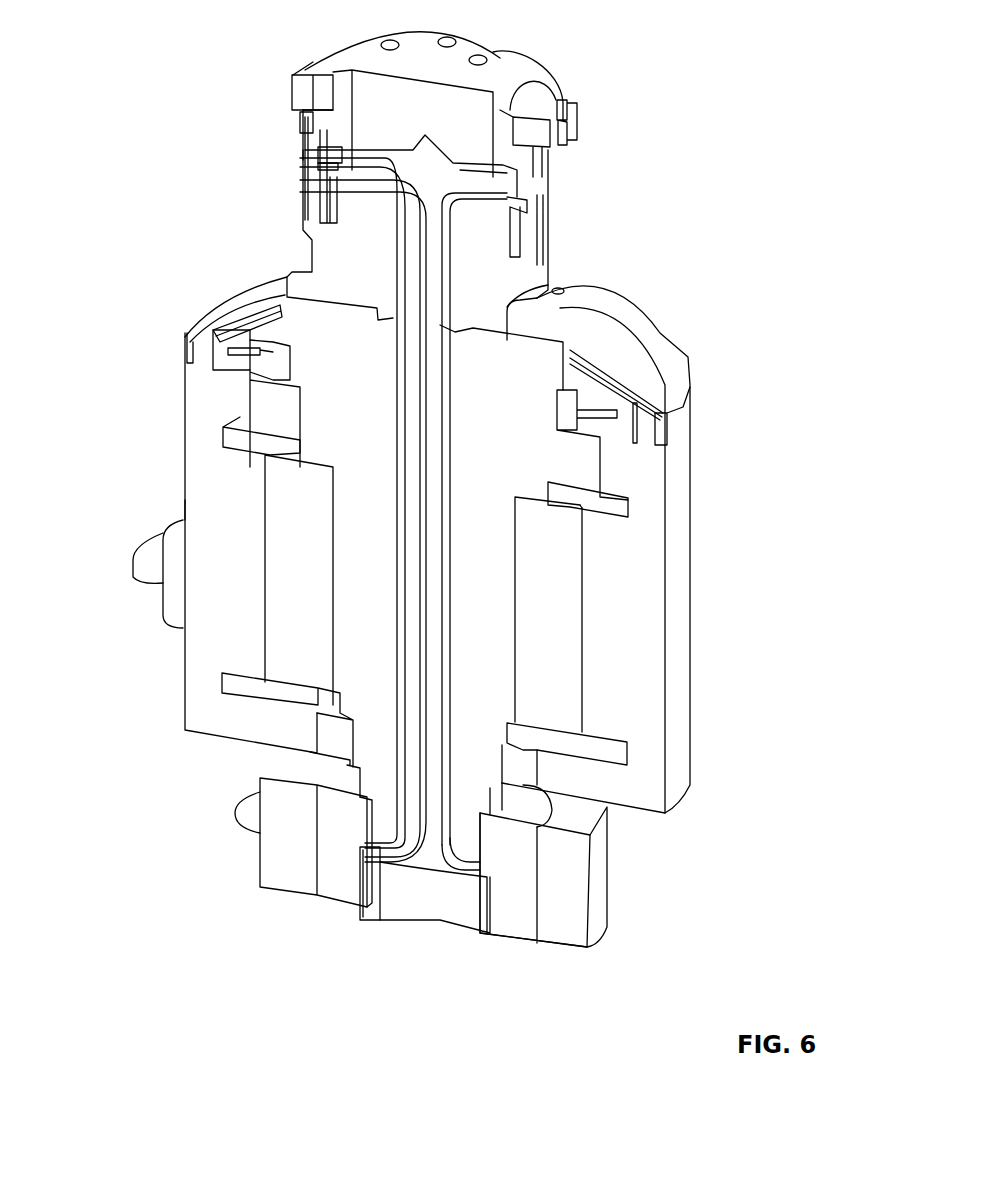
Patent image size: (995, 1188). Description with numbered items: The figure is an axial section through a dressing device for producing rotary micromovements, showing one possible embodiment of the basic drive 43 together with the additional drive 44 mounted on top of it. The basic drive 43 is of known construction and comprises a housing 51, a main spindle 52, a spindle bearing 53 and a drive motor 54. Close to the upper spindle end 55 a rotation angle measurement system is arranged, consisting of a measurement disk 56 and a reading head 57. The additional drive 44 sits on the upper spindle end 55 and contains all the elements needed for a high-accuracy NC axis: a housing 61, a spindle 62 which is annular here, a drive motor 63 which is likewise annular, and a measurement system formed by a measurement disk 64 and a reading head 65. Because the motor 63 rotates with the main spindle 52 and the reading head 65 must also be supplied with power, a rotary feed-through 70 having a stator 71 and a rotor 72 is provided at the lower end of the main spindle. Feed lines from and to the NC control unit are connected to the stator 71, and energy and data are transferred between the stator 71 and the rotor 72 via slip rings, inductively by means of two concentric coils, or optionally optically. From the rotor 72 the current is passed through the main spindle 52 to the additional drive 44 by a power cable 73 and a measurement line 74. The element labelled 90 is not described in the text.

The basic drive 43 is at (153, 677).
The additional drive 44 is at (204, 219).
The housing 51 is at (685, 715).
The main spindle 52 is at (487, 563).
The spindle bearing 53 is at (235, 435).
The drive motor 54 is at (555, 612).
The upper spindle end 55 is at (560, 308).
The measurement disk 56 is at (225, 378).
The reading head 57 is at (240, 345).
The housing 61 is at (520, 284).
The spindle 62 is at (503, 123).
The drive motor 63 is at (540, 215).
The measurement disk 64 is at (332, 158).
The reading head 65 is at (330, 172).
The rotary feed-through 70 is at (652, 870).
The stator 71 is at (580, 910).
The rotor 72 is at (510, 930).
The power cable 73 is at (468, 885).
The measurement line 74 is at (392, 872).
The cap left block 90 is at (300, 75).